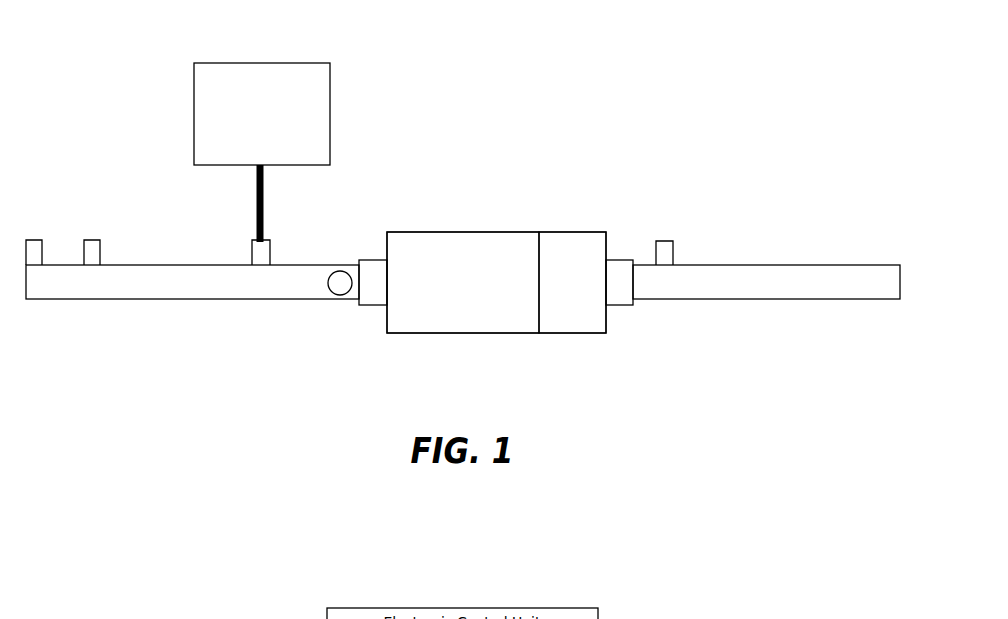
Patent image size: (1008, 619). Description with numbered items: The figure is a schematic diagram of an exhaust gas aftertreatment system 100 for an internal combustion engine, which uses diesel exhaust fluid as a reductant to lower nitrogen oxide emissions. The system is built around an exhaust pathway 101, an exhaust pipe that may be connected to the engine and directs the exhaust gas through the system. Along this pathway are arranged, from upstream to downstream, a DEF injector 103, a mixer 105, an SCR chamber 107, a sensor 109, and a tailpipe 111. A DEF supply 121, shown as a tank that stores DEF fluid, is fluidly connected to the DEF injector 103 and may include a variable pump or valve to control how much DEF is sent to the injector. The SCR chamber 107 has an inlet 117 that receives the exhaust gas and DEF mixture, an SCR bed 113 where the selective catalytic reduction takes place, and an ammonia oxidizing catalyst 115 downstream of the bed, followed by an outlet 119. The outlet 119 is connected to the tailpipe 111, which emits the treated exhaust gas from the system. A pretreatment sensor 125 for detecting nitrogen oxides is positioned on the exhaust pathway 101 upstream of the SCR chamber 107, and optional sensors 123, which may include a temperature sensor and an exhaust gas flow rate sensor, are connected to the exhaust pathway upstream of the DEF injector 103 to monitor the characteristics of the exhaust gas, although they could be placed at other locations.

The exhaust gas aftertreatment system 100 is at (593, 104).
The exhaust pathway 101 is at (155, 300).
The DEF injector 103 is at (252, 252).
The mixer 105 is at (330, 272).
The SCR chamber 107 is at (466, 204).
The sensor 109 is at (654, 248).
The tailpipe 111 is at (782, 300).
The SCR bed 113 is at (447, 334).
The ammonia oxidizing catalyst 115 is at (572, 335).
The inlet 117 is at (372, 305).
The outlet 119 is at (620, 306).
The DEF supply 121 is at (193, 82).
The optional sensors 123 is at (43, 247).
The pretreatment sensor 125 is at (94, 240).